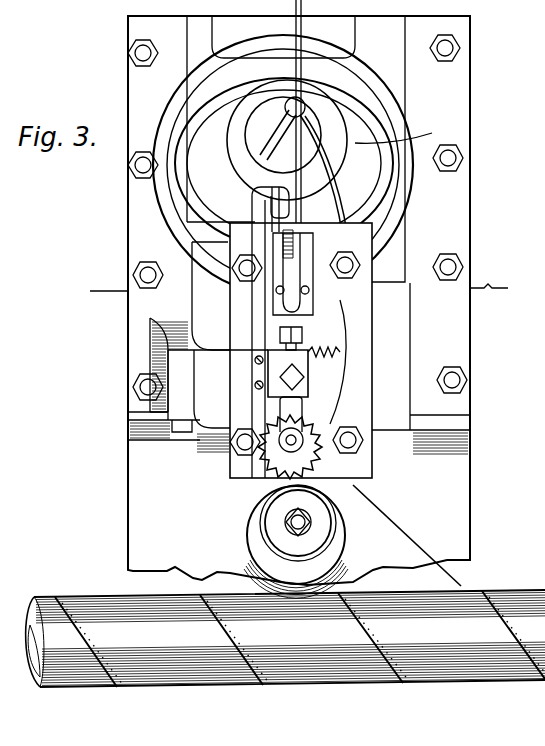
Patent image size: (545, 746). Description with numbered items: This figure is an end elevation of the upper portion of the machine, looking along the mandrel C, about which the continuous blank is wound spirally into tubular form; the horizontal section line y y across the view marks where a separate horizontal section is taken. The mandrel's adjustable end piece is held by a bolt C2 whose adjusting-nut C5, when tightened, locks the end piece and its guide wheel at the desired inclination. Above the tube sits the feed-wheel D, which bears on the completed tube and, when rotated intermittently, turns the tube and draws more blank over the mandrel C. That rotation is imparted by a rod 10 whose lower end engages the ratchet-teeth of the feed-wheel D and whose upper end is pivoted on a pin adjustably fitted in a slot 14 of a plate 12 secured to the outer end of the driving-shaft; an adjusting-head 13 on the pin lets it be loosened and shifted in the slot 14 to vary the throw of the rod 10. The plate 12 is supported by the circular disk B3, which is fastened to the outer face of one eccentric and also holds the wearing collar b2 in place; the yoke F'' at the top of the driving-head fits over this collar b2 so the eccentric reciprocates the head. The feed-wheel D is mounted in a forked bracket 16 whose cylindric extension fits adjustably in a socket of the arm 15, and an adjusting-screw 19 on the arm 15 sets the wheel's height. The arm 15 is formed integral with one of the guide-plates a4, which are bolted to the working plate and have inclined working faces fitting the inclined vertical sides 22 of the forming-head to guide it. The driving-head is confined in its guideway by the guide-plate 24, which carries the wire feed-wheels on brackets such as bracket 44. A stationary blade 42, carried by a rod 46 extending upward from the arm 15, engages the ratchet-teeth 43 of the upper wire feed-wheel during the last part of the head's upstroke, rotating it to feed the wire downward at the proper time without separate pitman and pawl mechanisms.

The guide-plates a4 is at (135, 206).
The yoke F'' is at (298, 165).
The wearing collar b2 is at (403, 131).
The circular plate or disk B3 is at (278, 137).
The adjusting-head 13 is at (303, 102).
The slot 14 is at (276, 136).
The plate 12 is at (316, 172).
The rod 10 is at (348, 333).
The guide-plate 24 is at (348, 393).
The stationary blade 42 is at (255, 222).
The ratchet-teeth 43 is at (228, 242).
The rod 46 is at (262, 310).
The bracket 44 is at (300, 247).
The adjusting-screw 19 is at (302, 333).
The arm 15 is at (232, 384).
The inclined vertical sides 22 is at (185, 430).
The feed-wheel D is at (258, 468).
The forked bracket 16 is at (302, 448).
The mandrel C is at (355, 540).
The adjusting-nut C5 is at (312, 521).
The bolt C2 is at (266, 524).
The section line y is at (294, 293).